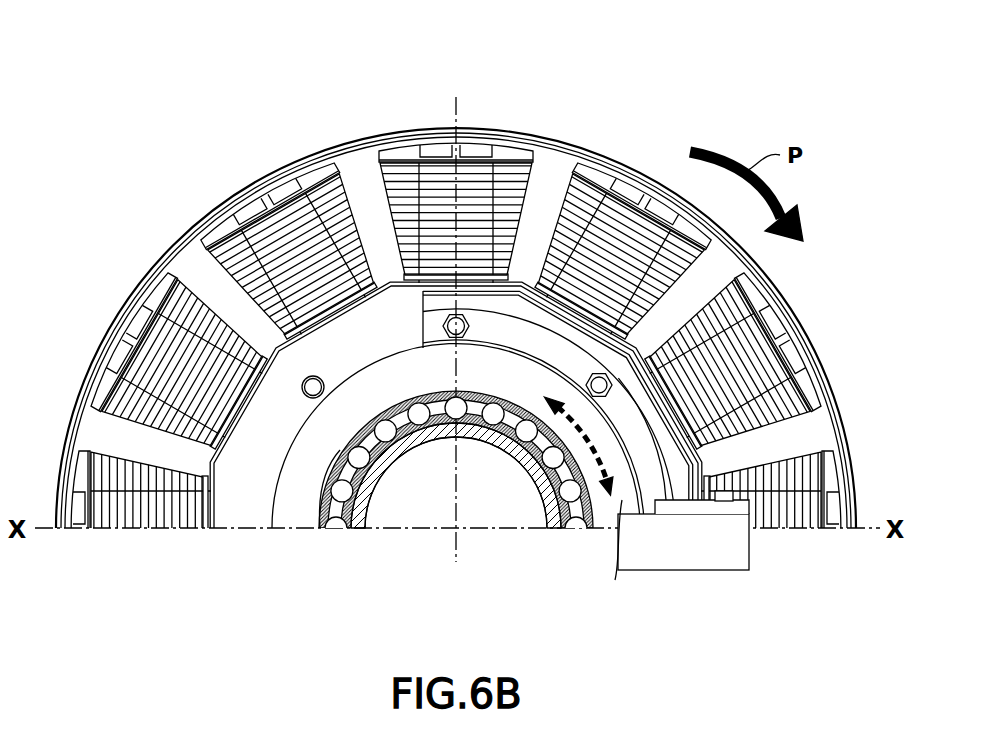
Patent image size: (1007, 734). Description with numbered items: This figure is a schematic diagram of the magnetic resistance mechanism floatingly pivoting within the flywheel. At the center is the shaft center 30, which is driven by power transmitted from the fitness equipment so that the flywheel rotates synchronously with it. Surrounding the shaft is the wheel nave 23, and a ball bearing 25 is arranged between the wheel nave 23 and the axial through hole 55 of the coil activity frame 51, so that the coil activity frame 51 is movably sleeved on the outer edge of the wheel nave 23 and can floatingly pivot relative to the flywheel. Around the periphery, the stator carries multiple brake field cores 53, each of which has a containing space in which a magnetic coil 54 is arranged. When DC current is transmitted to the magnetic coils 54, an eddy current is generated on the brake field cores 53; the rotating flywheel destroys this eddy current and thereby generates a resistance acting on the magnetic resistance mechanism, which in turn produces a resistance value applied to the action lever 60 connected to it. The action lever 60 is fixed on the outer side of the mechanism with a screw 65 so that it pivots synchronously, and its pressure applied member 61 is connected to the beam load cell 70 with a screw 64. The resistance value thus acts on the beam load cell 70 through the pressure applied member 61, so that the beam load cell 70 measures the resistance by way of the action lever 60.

The wheel nave 23 is at (397, 456).
The ball bearing 25 is at (345, 470).
The shaft center 30 is at (497, 512).
The coil activity frame 51 is at (285, 510).
The brake field core 53 is at (397, 150).
The magnetic coil 54 is at (122, 480).
The axial through hole 55 is at (337, 455).
The action lever 60 is at (633, 425).
The pressure applied member 61 is at (737, 508).
The screw 64 is at (723, 501).
The screw 65 is at (599, 383).
The beam load cell 70 is at (660, 553).